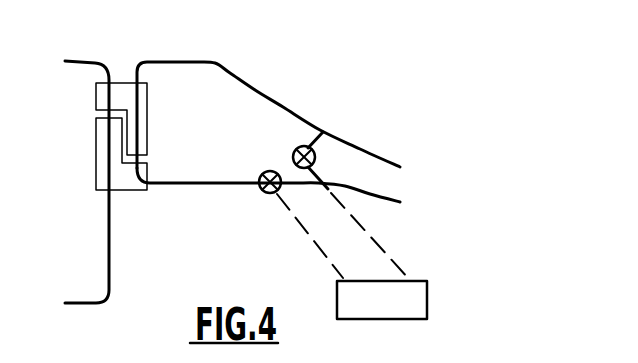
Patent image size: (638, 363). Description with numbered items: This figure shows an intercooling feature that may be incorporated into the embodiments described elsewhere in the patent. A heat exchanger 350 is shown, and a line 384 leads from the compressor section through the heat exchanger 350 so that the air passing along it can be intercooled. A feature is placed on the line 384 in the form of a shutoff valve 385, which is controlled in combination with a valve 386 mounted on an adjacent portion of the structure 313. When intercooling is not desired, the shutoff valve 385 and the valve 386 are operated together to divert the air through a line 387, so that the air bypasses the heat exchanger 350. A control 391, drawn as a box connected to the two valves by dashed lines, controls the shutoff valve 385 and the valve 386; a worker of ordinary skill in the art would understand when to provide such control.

The vehicle body panel 313 is at (285, 107).
The heat exchanger 350 is at (147, 118).
The line 384 is at (199, 183).
The shutoff valve 385 is at (272, 192).
The valve 386 is at (316, 159).
The line 387 is at (313, 142).
The control 391 is at (412, 303).